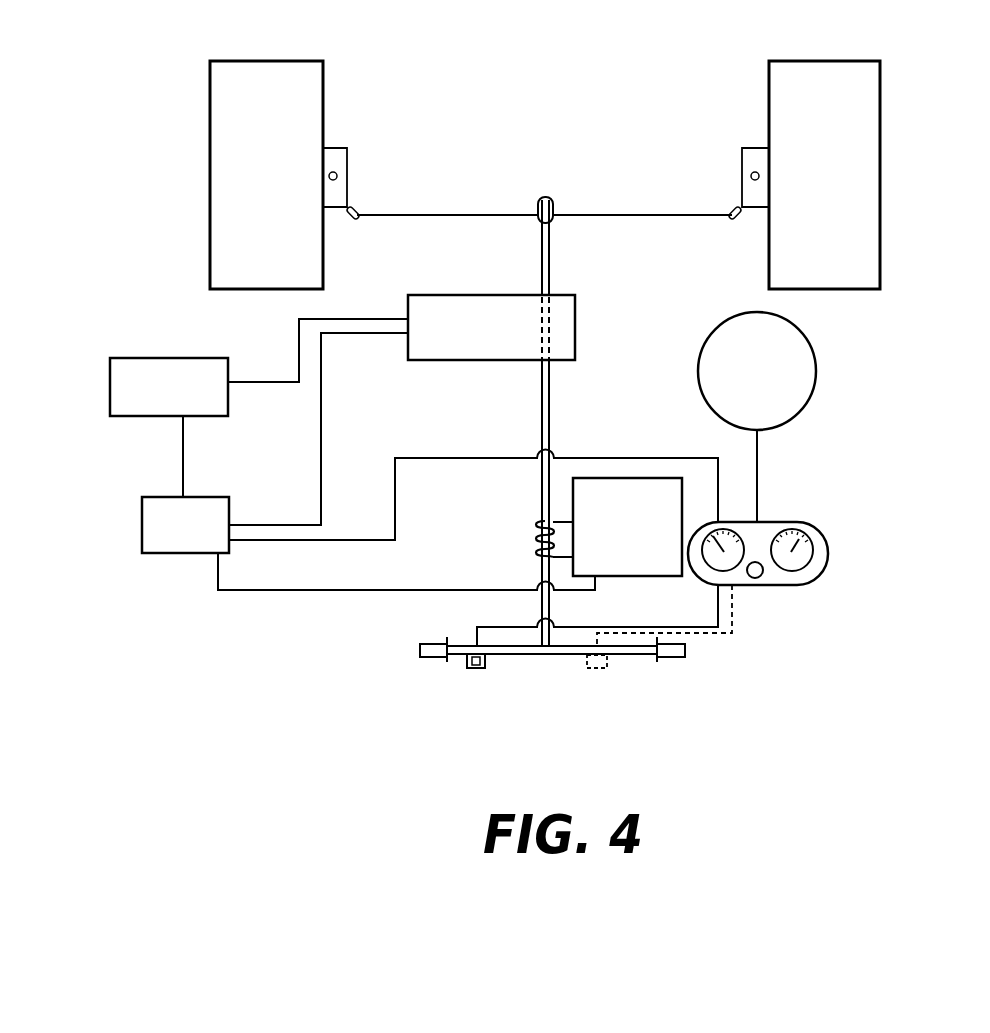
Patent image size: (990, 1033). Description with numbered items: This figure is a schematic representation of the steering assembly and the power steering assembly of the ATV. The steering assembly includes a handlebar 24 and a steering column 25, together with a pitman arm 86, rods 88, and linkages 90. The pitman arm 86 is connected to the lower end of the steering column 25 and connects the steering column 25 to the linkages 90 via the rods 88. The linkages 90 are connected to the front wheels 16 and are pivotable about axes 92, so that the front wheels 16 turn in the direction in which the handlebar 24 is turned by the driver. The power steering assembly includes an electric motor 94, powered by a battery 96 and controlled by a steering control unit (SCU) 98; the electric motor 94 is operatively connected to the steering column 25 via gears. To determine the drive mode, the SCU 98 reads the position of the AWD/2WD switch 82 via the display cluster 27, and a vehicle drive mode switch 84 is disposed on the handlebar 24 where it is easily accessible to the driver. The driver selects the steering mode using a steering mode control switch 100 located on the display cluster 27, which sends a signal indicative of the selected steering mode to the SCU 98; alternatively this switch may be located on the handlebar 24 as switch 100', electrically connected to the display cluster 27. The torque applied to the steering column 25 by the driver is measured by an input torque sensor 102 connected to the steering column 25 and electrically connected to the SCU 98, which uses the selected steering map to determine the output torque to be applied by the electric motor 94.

The front wheels 16 is at (210, 162).
The handlebar 24 is at (618, 657).
The steering column 25 is at (551, 394).
The display cluster 27 is at (783, 522).
The AWD/2WD switch 82 is at (816, 371).
The vehicle drive mode switch 84 is at (476, 668).
The pitman arm 86 is at (553, 211).
The rods 88 is at (467, 213).
The linkages 90 is at (358, 209).
The axes 92 is at (338, 173).
The electric motor 94 is at (461, 360).
The battery 96 is at (187, 358).
The steering control unit (SCU) 98 is at (173, 553).
The steering mode control switch 100 is at (773, 602).
The steering mode control switch 100' is at (634, 660).
The input torque sensor 102 is at (618, 578).